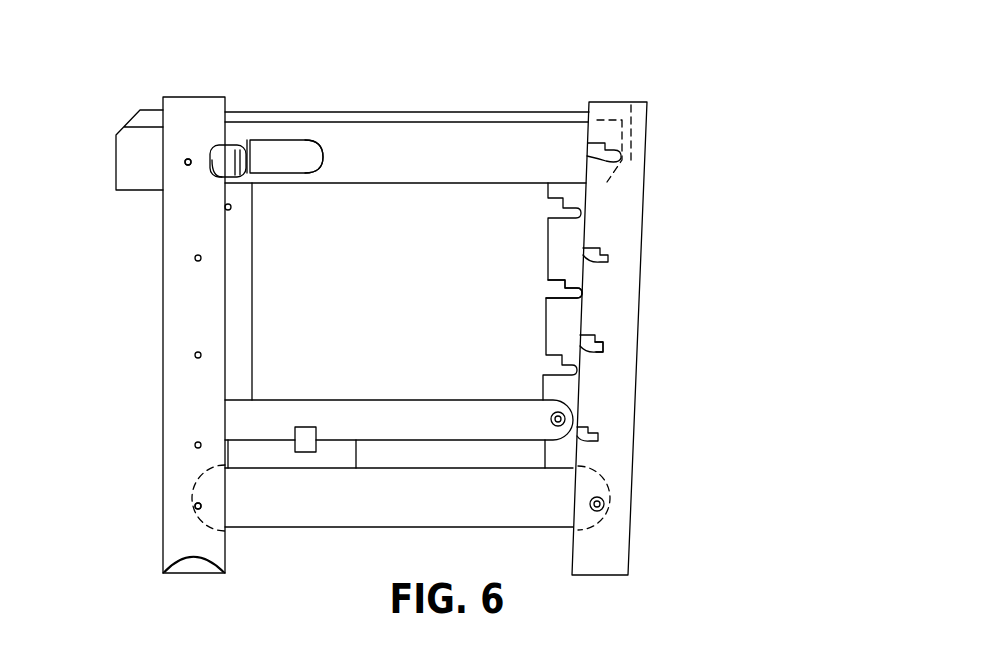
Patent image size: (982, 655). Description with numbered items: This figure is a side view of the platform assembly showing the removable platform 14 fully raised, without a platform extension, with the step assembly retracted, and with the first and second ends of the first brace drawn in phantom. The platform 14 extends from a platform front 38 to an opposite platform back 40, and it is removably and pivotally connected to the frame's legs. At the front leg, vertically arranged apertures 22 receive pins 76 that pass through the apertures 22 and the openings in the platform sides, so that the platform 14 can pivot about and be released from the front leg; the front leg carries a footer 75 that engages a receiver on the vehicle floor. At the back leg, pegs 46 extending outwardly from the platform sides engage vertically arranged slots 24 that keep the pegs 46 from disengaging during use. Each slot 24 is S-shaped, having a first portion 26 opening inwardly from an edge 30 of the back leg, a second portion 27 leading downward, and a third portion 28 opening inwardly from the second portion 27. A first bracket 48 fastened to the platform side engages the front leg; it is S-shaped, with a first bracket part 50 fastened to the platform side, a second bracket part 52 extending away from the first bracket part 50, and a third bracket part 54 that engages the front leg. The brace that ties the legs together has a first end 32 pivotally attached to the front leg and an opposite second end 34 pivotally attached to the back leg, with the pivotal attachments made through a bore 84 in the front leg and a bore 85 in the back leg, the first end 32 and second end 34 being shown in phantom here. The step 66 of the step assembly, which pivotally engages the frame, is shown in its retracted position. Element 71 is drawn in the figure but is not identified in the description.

The platform 14 is at (465, 135).
The apertures 22 is at (195, 262).
The slots 24 is at (608, 259).
The first portion 26 is at (592, 335).
The second portion 27 is at (592, 355).
The third portion 28 is at (604, 352).
The edge 30 is at (582, 292).
The first end 32 is at (188, 482).
The second end 34 is at (606, 490).
The platform front 38 is at (117, 148).
The platform back 40 is at (625, 133).
The pegs 46 is at (622, 163).
The first bracket 48 is at (292, 150).
The first bracket part 50 is at (306, 165).
The second bracket part 52 is at (244, 148).
The third bracket part 54 is at (225, 170).
The step 66 is at (272, 448).
The arm stop block 71 is at (305, 440).
The footer 75 is at (163, 571).
The pins 76 is at (186, 165).
The bore 84 is at (195, 508).
The bore 85 is at (604, 509).